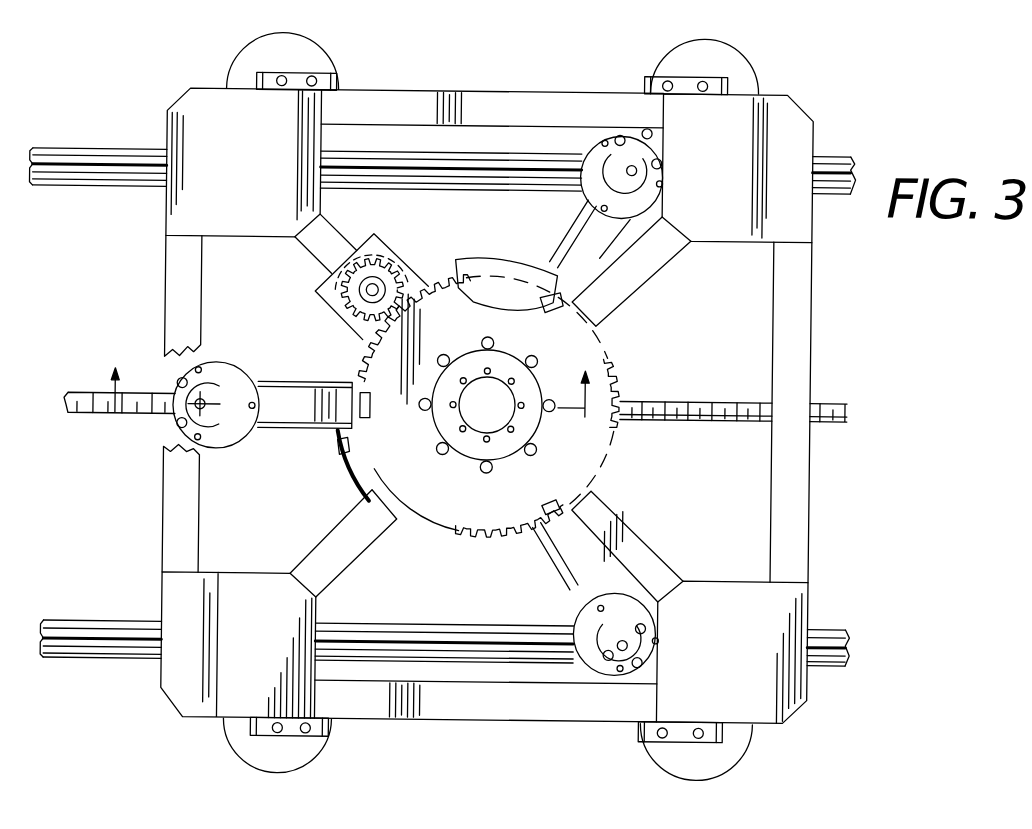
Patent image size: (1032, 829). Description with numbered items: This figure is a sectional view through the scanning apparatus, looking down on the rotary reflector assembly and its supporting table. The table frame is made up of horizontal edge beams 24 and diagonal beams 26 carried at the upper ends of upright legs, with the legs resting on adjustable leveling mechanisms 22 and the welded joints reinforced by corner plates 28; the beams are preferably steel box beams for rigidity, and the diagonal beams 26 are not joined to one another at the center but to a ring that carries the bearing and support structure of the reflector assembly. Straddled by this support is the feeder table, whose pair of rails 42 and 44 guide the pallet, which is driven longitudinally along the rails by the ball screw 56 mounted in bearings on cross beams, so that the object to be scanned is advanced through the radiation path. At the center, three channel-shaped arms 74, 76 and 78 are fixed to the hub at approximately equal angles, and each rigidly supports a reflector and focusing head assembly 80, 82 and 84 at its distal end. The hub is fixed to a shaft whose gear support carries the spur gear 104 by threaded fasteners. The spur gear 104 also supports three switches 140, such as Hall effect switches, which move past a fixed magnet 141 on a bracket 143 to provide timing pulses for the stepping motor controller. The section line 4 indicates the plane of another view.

The section line 4- 4 is at (344, 374).
The adjustable leveling mechanisms 22 is at (301, 52).
The horizontal edge beams 24 is at (538, 99).
The diagonal beams 26 is at (329, 240).
The corner plates 28 is at (175, 117).
The rail 42 is at (431, 173).
The rail 44 is at (395, 629).
The ball screw 56 is at (728, 357).
The arm 74 is at (552, 552).
The arm 76 is at (573, 225).
The arm 78 is at (305, 388).
The reflector and focusing head assembly 80 is at (591, 611).
The reflector and focusing head assembly 82 is at (582, 194).
The reflector and focusing head assembly 84 is at (231, 431).
The spur gear 104 is at (588, 451).
The switches 140 is at (537, 298).
The fixed magnet 141 is at (338, 454).
The bracket 143 is at (353, 494).